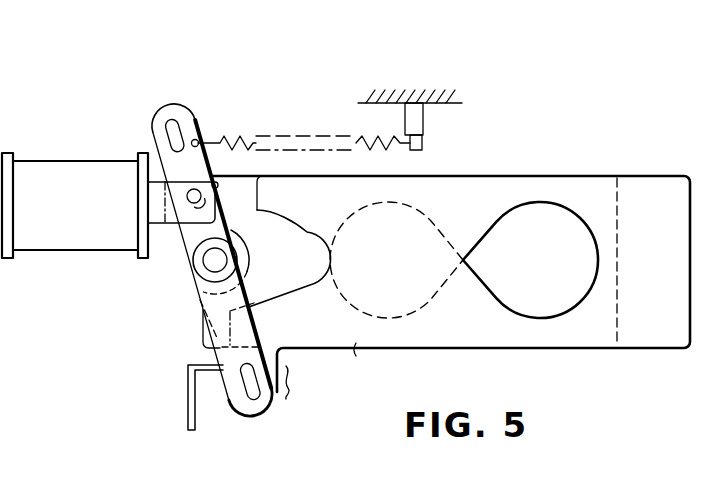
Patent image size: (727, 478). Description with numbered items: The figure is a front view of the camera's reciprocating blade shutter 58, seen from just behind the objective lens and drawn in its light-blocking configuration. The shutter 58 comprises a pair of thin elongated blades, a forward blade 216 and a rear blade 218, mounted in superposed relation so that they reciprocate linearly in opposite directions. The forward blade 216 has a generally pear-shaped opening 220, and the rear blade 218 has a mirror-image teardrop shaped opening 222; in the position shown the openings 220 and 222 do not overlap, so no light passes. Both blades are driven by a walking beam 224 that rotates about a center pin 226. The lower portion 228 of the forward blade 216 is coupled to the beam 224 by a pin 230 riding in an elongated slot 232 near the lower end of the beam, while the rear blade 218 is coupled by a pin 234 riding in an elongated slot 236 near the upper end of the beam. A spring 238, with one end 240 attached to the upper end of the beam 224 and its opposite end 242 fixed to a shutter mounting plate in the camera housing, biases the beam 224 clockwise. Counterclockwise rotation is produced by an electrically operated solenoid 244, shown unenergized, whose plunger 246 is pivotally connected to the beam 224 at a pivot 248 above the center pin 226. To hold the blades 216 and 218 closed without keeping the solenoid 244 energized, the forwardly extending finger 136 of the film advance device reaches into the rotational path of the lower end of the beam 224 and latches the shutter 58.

The shutter 58 is at (487, 142).
The forwardly extending finger 136 is at (188, 377).
The forward shutter blade 216 is at (357, 349).
The rear shutter blade 218 is at (281, 231).
The pear-shaped opening 220 is at (550, 203).
The teardrop shaped opening 222 is at (436, 228).
The walking beam 224 is at (157, 140).
The pin 226 is at (213, 262).
The lower portion of forward blade 228 is at (288, 386).
The pin 230 is at (256, 398).
The elongated slot 232 is at (271, 350).
The pin 234 is at (168, 113).
The elongated slot 236 is at (162, 166).
The spring 238 is at (238, 134).
The spring end 240 is at (197, 138).
The spring end 242 is at (422, 124).
The solenoid 244 is at (67, 243).
The plunger 246 is at (153, 201).
The pivot 248 is at (190, 202).